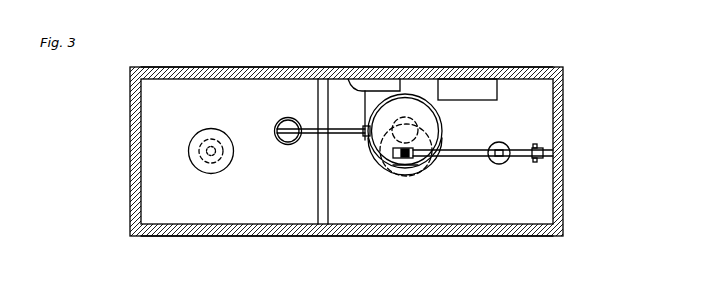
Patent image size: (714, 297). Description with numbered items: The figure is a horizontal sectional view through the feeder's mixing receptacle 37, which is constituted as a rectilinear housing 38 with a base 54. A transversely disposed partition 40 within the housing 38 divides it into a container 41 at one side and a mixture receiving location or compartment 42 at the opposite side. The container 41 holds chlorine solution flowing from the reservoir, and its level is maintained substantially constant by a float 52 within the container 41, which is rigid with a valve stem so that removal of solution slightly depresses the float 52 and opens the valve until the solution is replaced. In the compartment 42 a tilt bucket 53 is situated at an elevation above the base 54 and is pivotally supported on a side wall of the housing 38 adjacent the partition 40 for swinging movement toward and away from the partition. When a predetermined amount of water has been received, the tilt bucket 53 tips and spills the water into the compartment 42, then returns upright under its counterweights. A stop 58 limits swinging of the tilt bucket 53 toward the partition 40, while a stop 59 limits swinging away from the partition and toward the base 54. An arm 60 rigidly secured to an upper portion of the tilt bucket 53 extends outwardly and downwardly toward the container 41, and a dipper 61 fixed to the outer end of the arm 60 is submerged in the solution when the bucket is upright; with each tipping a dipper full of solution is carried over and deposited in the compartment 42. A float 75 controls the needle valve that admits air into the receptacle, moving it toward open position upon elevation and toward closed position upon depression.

The mixing receptacle 37 is at (567, 93).
The rectilinear housing 38 is at (425, 70).
The partition 40 is at (330, 187).
The container 41 is at (200, 212).
The mixture receiving location or compartment 42 is at (468, 135).
The float 52 is at (234, 157).
The tilt bucket 53 is at (442, 128).
The base 54 is at (380, 213).
The stop 58 is at (363, 109).
The stop 59 is at (487, 101).
The arm 60 is at (333, 135).
The dipper 61 is at (291, 117).
The float 75 is at (421, 175).